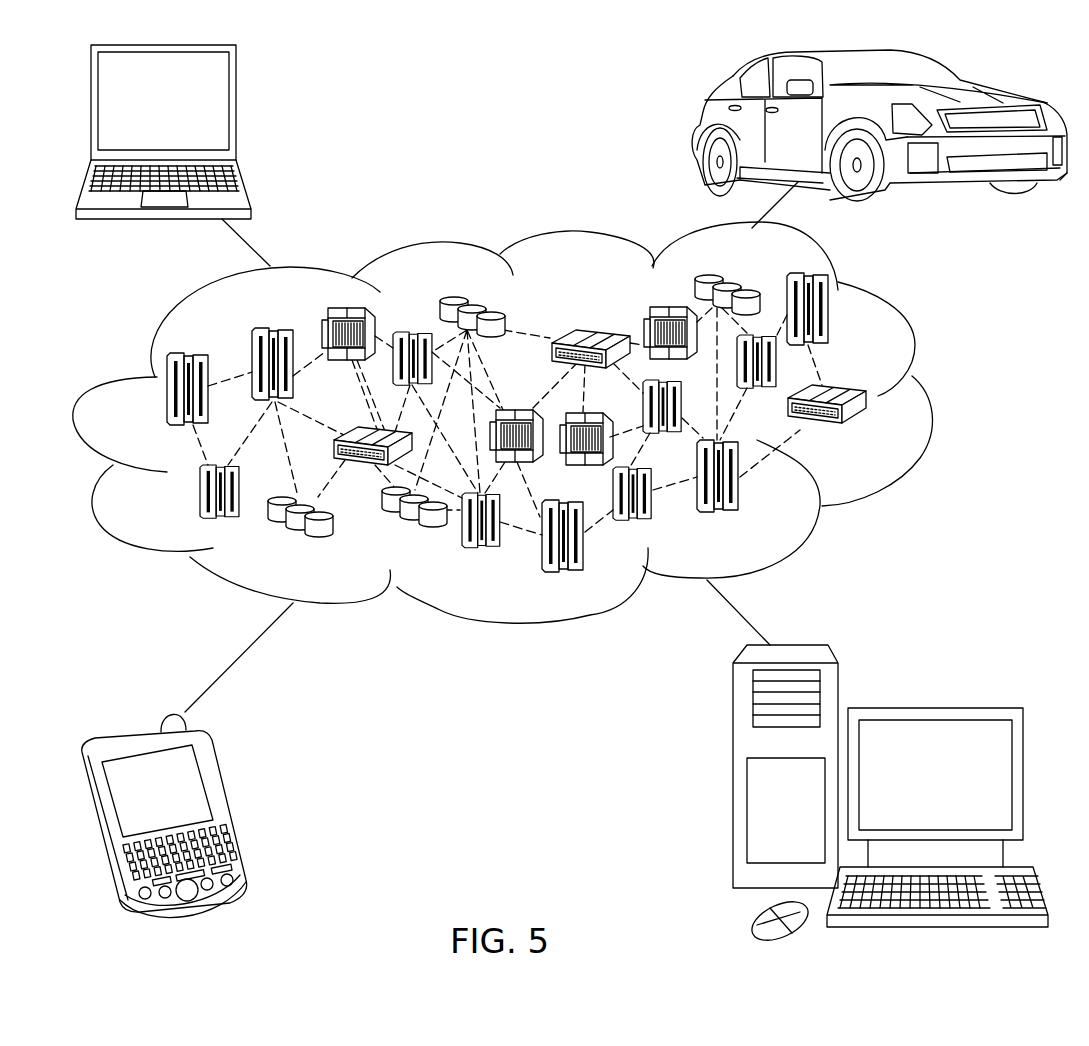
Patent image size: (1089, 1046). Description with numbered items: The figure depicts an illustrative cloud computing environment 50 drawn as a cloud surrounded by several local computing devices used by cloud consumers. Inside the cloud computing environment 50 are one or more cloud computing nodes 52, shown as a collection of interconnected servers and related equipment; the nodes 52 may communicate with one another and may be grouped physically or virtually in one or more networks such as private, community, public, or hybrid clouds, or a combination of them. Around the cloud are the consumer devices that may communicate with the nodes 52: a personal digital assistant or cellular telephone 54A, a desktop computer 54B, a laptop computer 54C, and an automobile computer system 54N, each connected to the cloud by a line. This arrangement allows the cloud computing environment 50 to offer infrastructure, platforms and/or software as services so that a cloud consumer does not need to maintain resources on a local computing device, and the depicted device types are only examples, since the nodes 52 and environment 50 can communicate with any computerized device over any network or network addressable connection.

The cloud computing environment 50 is at (932, 400).
The cloud computing nodes 52 is at (872, 432).
The personal digital assistant or cellular telephone 54A is at (223, 806).
The desktop computer 54B is at (933, 707).
The laptop computer 54C is at (236, 108).
The automobile computer system 54N is at (697, 127).